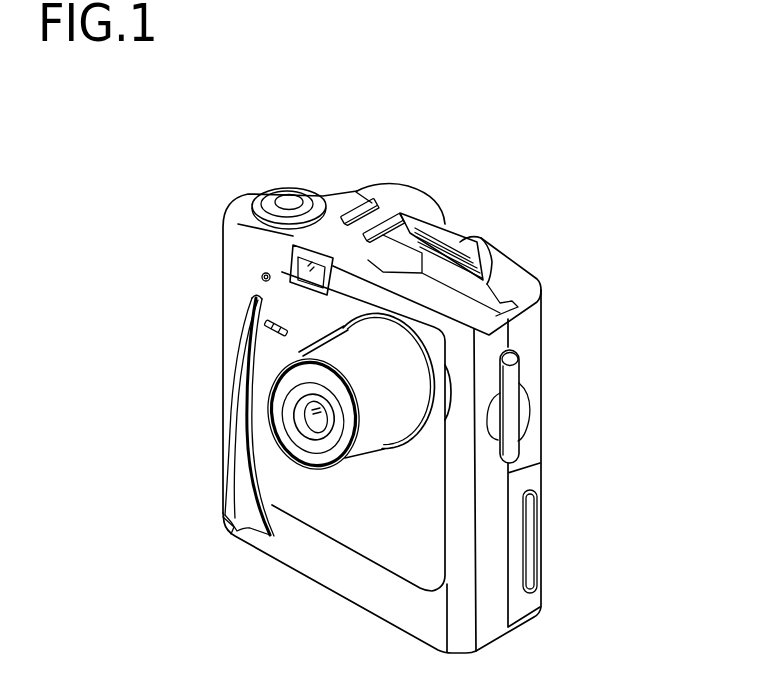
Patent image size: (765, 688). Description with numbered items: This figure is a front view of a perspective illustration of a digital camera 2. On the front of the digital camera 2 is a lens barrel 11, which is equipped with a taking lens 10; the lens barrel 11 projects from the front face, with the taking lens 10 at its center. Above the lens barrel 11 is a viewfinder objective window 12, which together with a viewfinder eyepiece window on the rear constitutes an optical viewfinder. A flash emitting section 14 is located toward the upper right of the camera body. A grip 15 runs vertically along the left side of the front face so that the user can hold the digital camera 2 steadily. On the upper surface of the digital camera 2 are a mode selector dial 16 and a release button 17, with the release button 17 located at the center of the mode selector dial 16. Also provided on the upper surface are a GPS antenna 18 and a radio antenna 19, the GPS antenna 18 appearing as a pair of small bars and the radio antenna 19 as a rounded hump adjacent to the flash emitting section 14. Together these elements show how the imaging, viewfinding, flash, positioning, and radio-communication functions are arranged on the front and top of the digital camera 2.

The digital camera 2 is at (563, 237).
The taking lens 10 is at (313, 430).
The lens barrel 11 is at (370, 420).
The viewfinder objective window 12 is at (292, 283).
The flash emitting section 14 is at (466, 243).
The grip 15 is at (238, 396).
The mode selector dial 16 is at (250, 193).
The release button 17 is at (288, 200).
The GPS antenna 18 is at (380, 188).
The radio antenna 19 is at (420, 197).